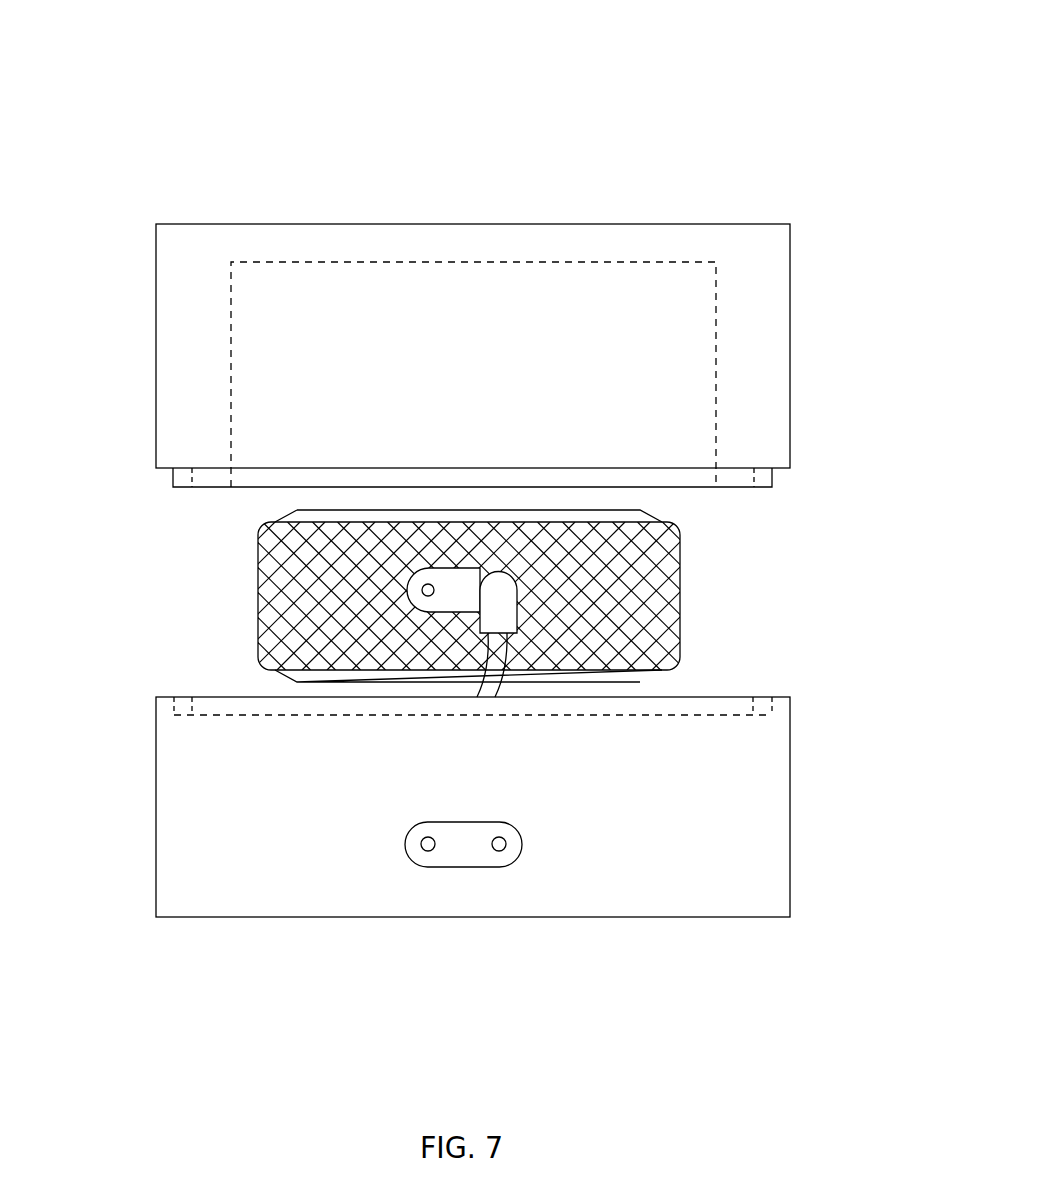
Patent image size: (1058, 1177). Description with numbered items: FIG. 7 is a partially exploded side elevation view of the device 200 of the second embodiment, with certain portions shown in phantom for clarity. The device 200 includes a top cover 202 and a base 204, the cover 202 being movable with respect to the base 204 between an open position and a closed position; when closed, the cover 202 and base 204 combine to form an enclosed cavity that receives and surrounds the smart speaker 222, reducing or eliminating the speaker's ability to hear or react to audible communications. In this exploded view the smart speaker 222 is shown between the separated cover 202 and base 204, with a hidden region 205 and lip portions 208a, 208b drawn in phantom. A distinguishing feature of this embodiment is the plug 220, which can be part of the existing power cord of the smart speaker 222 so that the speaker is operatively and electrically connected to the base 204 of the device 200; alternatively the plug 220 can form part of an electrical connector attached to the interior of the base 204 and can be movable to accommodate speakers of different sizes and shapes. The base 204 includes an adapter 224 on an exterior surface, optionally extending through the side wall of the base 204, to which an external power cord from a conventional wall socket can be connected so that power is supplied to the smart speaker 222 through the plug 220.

The device 200 is at (552, 112).
The top cover 202 is at (792, 222).
The base 204 is at (792, 919).
The internal compartment 205 is at (377, 318).
The upper lip 208a is at (772, 488).
The lower lip 208b is at (243, 718).
The plug 220 is at (502, 598).
The smart speaker 222 is at (325, 607).
The adapter 224 is at (465, 858).